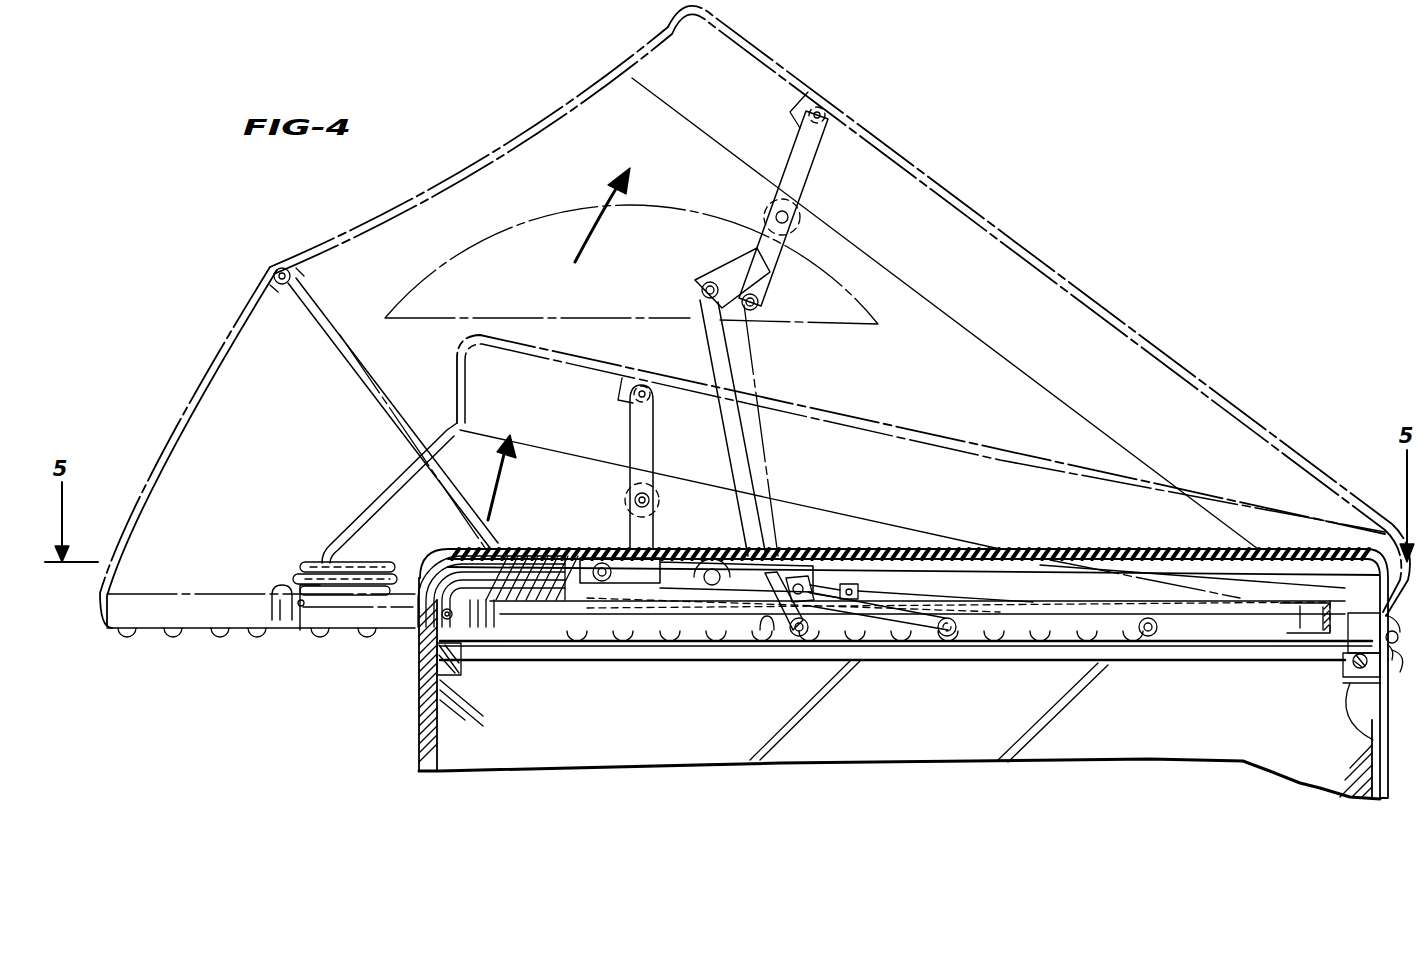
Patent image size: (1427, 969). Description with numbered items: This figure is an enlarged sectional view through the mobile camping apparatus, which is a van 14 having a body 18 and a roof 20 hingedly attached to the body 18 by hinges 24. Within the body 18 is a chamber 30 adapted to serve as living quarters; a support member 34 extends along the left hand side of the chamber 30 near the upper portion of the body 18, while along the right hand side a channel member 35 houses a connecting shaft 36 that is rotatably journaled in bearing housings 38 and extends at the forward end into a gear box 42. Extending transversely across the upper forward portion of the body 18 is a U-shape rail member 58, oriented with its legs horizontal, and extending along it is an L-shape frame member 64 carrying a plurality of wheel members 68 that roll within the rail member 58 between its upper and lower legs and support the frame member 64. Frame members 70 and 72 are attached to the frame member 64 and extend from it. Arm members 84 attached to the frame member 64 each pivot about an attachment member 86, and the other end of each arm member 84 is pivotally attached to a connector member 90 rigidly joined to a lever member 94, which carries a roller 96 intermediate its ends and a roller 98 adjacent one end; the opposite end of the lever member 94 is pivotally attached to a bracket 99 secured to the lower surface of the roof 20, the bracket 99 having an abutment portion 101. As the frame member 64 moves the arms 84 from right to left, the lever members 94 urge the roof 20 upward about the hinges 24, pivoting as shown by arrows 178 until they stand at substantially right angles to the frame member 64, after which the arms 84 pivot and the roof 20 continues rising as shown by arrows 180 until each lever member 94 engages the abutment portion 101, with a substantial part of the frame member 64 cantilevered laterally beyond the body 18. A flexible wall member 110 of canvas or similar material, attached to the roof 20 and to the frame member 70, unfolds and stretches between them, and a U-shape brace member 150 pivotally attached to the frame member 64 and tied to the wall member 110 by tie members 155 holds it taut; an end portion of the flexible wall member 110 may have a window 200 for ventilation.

The van 14 is at (400, 744).
The body 18 is at (1388, 745).
The roof 20 is at (982, 205).
The hinges 24 is at (1392, 655).
The chamber 30 is at (893, 743).
The support member 34 is at (425, 682).
The channel member 35 is at (1358, 690).
The connecting shaft 36 is at (1360, 670).
The bearing housings 38 is at (1342, 672).
The gear box 42 is at (1399, 626).
The U-shape rail member 58 is at (870, 648).
The L-shape frame member 64 is at (220, 593).
The wheel members 68 is at (130, 637).
The frame member 70 is at (515, 626).
The frame member 72 is at (1298, 612).
The arm members 84 is at (763, 447).
The attachment member 86 is at (800, 637).
The connector member 90 is at (728, 275).
The lever member 94 is at (808, 172).
The roller 96 is at (800, 218).
The roller 98 is at (760, 304).
The bracket 99 is at (838, 118).
The abutment portion 101 is at (790, 125).
The flexible wall member 110 is at (412, 193).
The U-shape brace member 150 is at (328, 350).
The tie members 155 is at (297, 276).
The arrows 178 is at (485, 470).
The arrows 180 is at (595, 246).
The window 200 is at (540, 218).